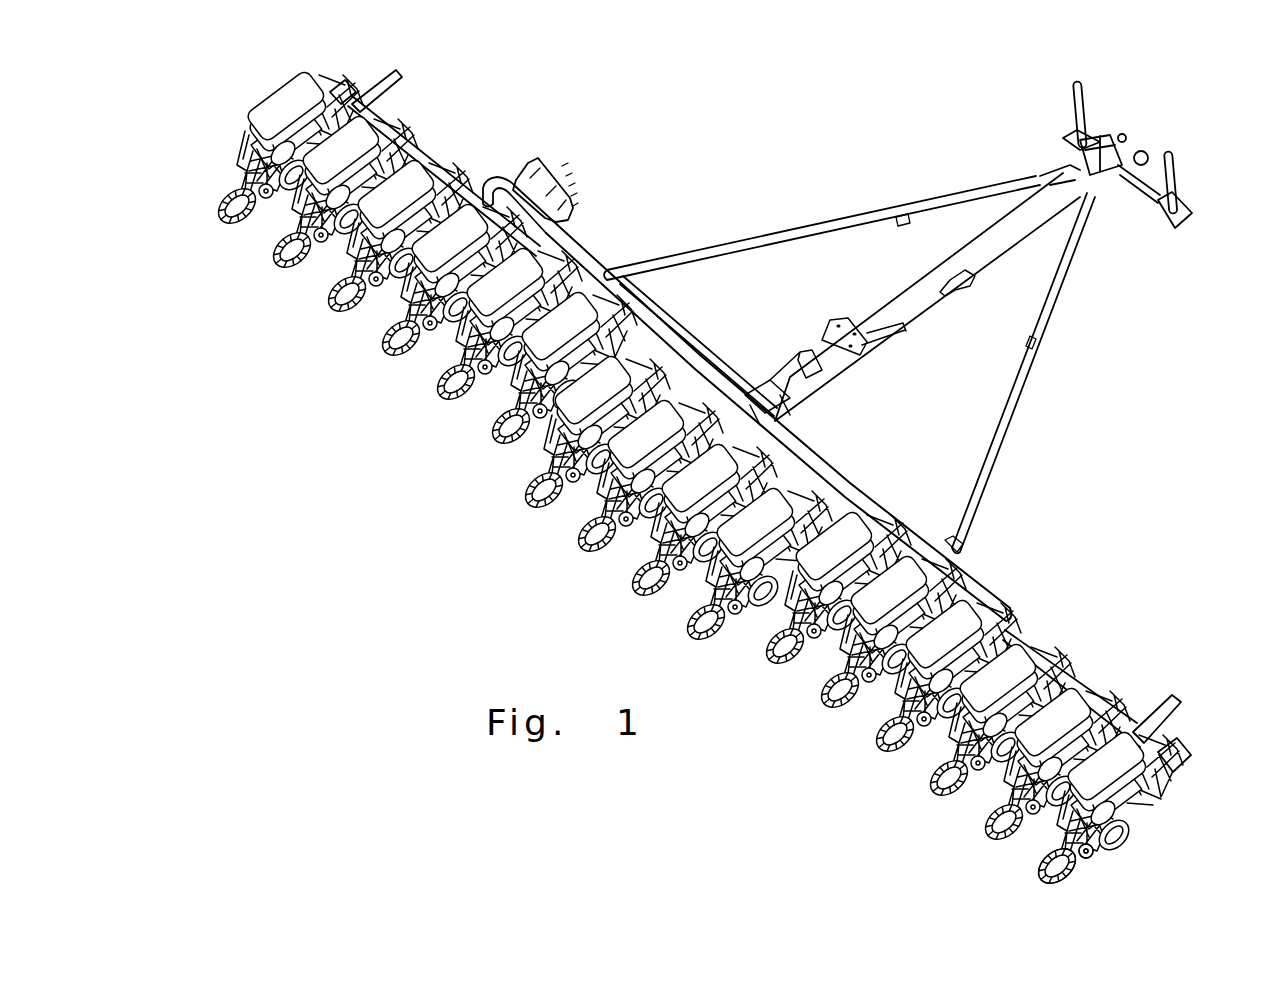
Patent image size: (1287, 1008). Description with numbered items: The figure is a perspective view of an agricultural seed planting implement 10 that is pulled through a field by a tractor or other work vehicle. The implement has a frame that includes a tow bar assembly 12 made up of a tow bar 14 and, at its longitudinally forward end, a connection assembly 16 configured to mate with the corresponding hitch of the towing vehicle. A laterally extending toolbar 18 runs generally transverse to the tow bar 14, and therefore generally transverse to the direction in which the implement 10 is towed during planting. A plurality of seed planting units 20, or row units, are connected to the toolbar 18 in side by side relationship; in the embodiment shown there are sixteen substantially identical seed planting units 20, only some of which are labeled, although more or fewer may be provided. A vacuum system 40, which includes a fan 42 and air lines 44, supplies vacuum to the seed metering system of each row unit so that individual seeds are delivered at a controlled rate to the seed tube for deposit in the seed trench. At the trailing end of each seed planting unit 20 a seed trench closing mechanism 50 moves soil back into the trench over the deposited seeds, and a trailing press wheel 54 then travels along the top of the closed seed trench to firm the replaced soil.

The seed planting implement 10 is at (713, 157).
The tow bar assembly 12 is at (1072, 374).
The tow bar 14 is at (988, 261).
The connection assembly 16 is at (1194, 180).
The toolbar 18 is at (1175, 743).
The seed planting unit 20 is at (228, 152).
The vacuum system 40 is at (593, 216).
The fan 42 is at (566, 162).
The air lines 44 is at (690, 356).
The seed trench closing mechanism 50 is at (1106, 861).
The trailing press wheel 54 is at (1045, 858).